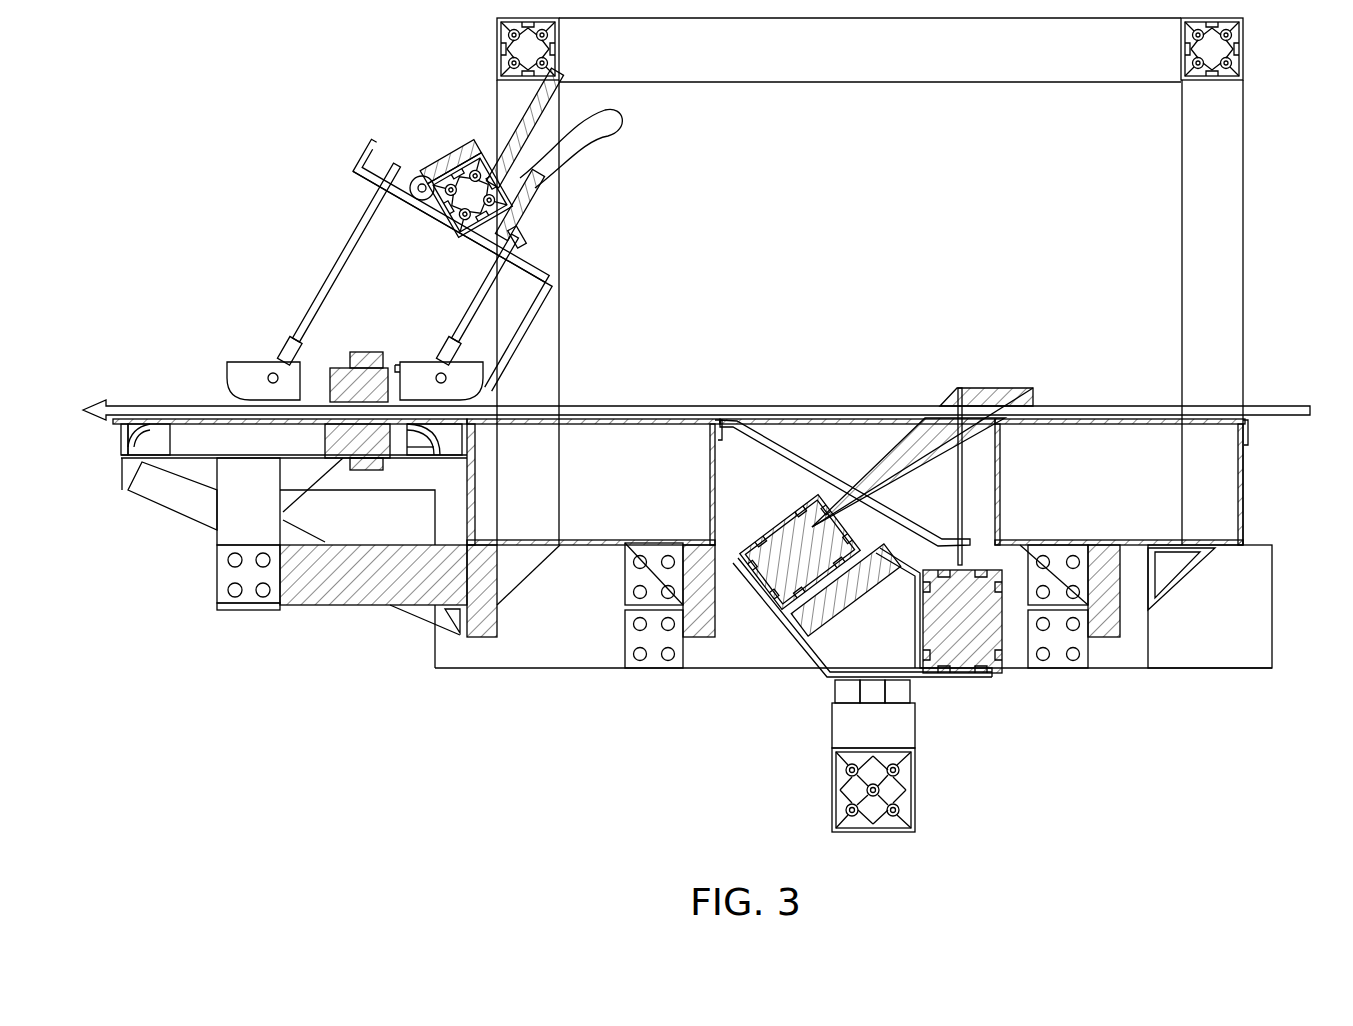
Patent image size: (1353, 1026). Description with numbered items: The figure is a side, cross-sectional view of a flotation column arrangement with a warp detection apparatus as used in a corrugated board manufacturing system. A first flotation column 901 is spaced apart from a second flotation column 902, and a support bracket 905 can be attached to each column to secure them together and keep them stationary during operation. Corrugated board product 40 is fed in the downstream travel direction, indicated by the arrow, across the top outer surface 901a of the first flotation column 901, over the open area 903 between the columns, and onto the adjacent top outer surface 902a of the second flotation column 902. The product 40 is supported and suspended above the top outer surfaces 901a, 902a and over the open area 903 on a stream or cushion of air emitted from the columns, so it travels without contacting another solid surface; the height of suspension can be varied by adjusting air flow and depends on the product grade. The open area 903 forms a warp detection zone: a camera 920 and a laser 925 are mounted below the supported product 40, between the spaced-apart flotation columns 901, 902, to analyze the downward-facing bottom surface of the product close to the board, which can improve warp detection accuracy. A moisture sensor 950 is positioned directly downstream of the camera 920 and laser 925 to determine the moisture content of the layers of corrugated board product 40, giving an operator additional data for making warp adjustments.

The corrugated board product 40 is at (1312, 405).
The first flotation column 901 is at (1045, 437).
The top outer surface of flotation column 901 901a is at (1130, 418).
The second flotation column 902 is at (578, 440).
The top outer surface of flotation column 902 902a is at (662, 420).
The open area 903 is at (880, 407).
The support bracket 905 is at (832, 470).
The camera 920 is at (775, 528).
The laser 925 is at (962, 652).
The moisture sensor 950 is at (420, 176).